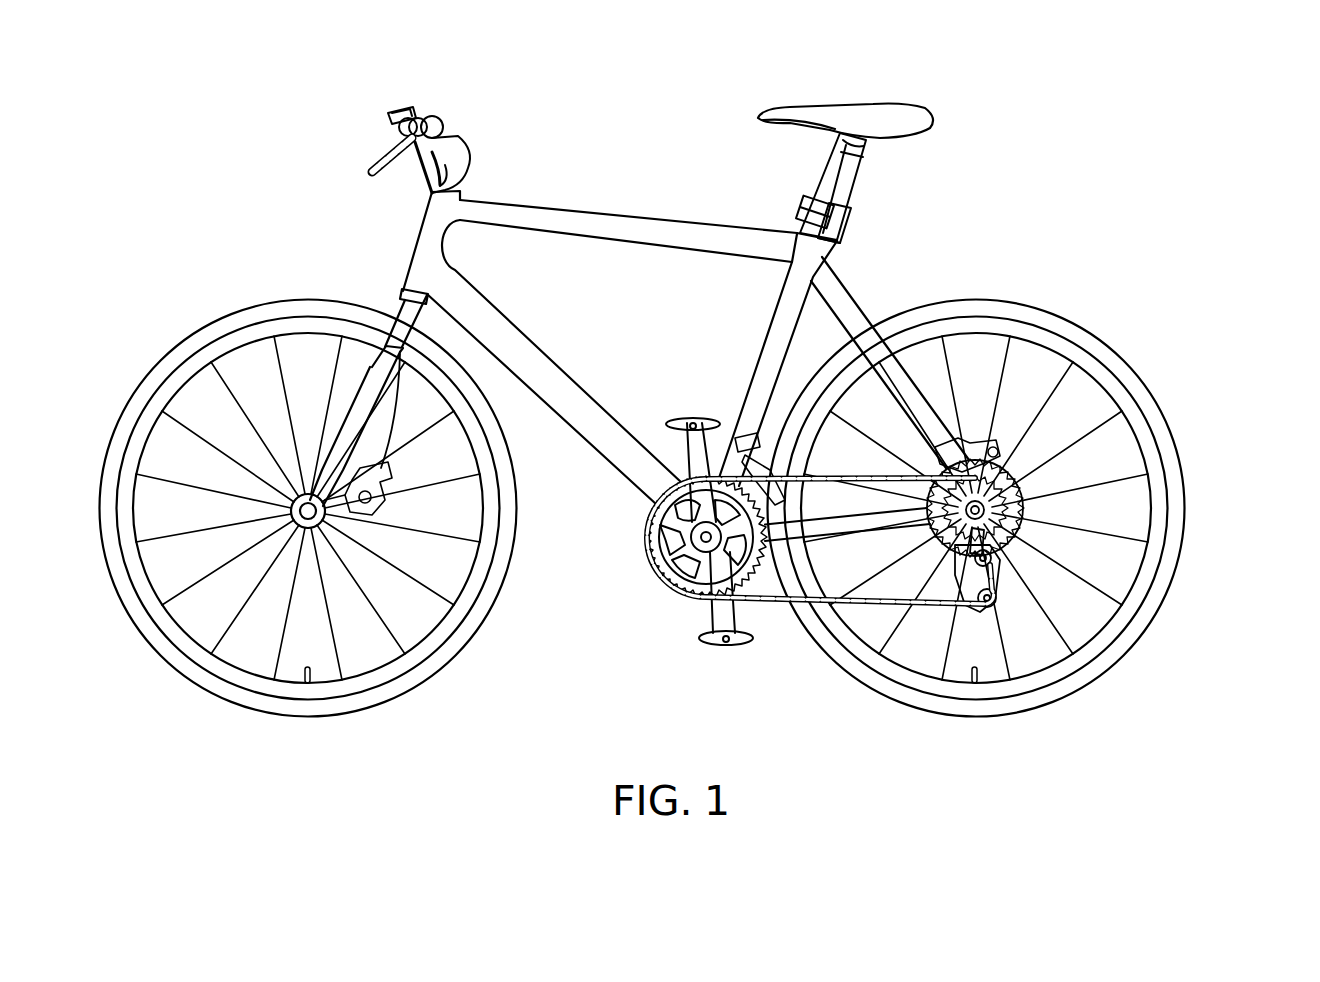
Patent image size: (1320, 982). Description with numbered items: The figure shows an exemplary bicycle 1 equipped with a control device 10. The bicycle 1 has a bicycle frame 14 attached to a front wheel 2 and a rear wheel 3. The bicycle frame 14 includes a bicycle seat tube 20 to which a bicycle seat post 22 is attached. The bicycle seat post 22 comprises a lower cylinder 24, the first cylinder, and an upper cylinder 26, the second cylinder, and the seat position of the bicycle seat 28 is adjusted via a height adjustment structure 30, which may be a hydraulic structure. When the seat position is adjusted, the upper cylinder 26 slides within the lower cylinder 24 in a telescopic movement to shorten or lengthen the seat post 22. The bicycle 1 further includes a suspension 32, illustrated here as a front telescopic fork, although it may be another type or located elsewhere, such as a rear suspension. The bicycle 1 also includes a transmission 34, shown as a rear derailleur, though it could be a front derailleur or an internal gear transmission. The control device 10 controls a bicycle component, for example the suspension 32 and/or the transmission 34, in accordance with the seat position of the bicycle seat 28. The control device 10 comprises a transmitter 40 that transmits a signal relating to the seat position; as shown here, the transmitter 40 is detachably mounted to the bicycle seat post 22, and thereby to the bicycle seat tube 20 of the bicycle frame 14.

The bicycle 1 is at (590, 62).
The front wheel 2 is at (226, 332).
The rear wheel 3 is at (1082, 344).
The control device 10 is at (870, 215).
The bicycle frame 14 is at (517, 323).
The bicycle seat tube 20 is at (820, 240).
The bicycle seat post 22 is at (740, 132).
The lower cylinder 24 is at (822, 203).
The upper cylinder 26 is at (827, 165).
The bicycle seat 28 is at (938, 112).
The height adjustment structure 30 is at (818, 209).
The suspension 32 is at (350, 398).
The transmission 34 is at (1040, 564).
The transmitter 40 is at (840, 234).